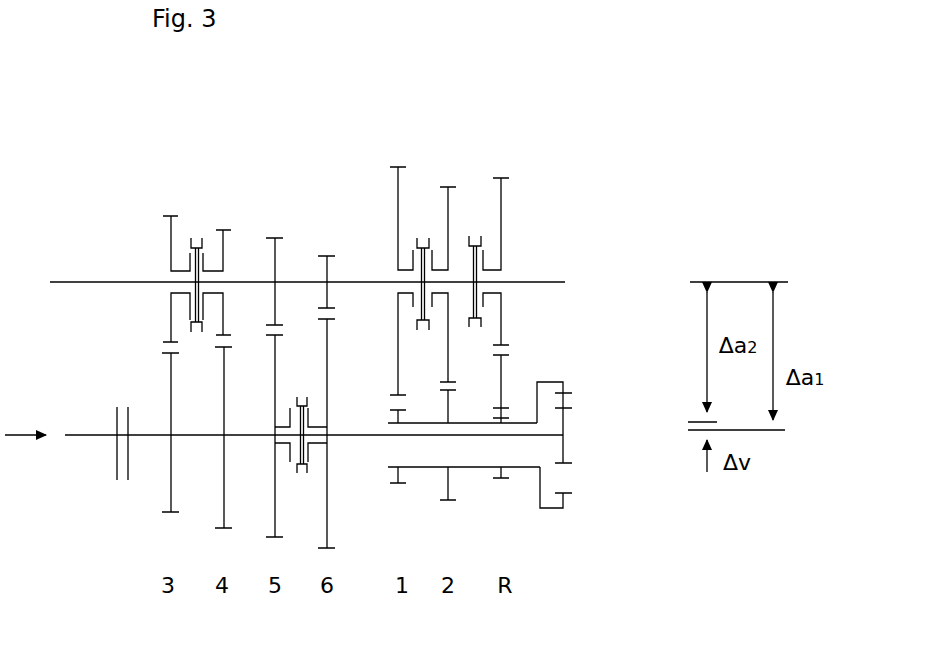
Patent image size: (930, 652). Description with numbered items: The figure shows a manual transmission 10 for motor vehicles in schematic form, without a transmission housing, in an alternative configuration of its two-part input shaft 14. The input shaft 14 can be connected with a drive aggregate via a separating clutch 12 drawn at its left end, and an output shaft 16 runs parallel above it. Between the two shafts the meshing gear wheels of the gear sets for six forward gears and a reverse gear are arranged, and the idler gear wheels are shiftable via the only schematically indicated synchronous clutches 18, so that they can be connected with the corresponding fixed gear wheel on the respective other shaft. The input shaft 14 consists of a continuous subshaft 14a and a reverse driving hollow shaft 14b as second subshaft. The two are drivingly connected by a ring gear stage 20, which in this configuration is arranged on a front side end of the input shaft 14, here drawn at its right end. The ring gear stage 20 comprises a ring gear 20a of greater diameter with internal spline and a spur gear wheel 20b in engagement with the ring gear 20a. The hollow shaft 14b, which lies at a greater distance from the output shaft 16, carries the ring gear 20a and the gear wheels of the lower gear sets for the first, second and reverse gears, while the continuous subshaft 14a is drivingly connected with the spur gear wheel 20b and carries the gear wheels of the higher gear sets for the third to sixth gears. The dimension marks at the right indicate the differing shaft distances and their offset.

The manual transmission 10 is at (543, 196).
The separating clutch 12 is at (117, 453).
The input shaft 14 is at (428, 482).
The subshaft 14a is at (155, 434).
The hollow shaft 14b is at (520, 468).
The output shaft 16 is at (378, 281).
The synchronous clutches 18 is at (197, 235).
The ring gear stage 20 is at (575, 474).
The ring gear 20a is at (540, 381).
The spur gear wheel 20b is at (565, 421).